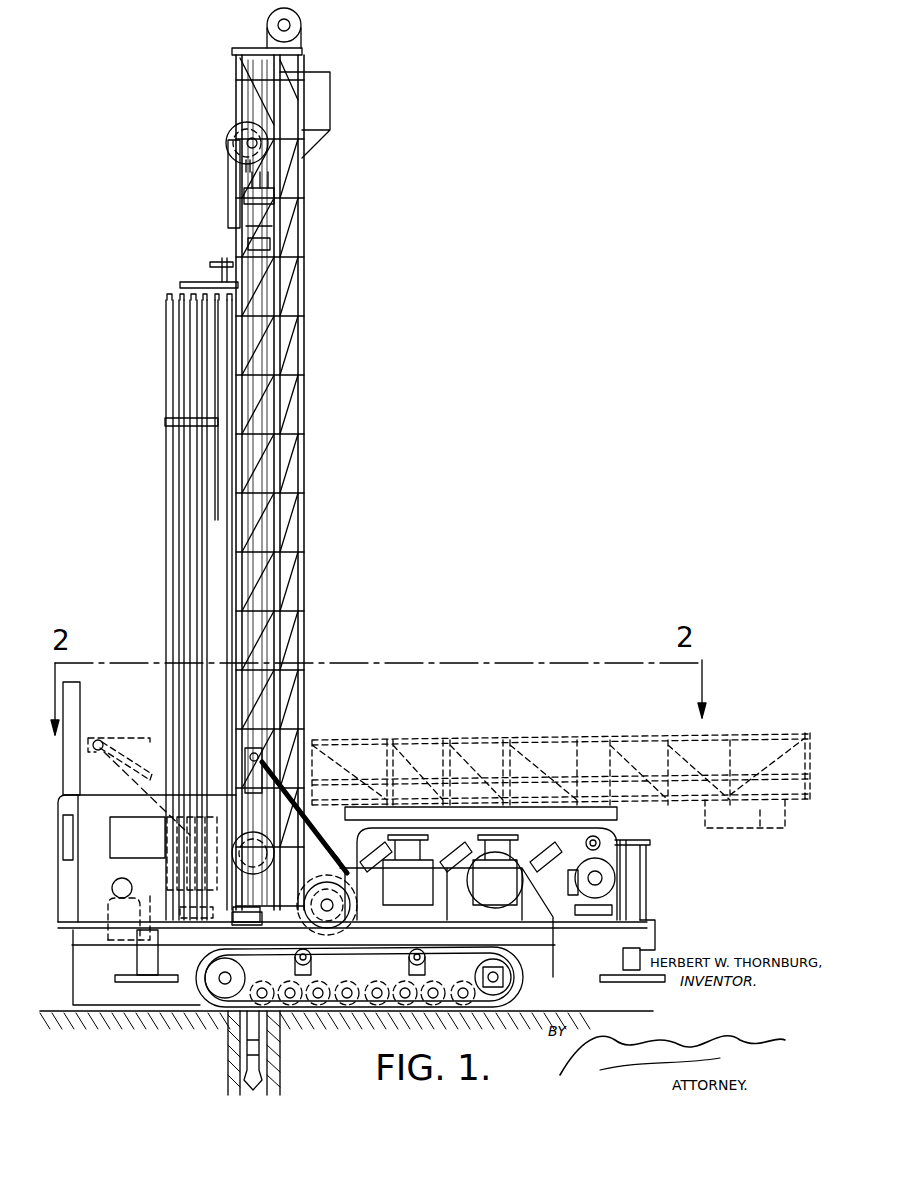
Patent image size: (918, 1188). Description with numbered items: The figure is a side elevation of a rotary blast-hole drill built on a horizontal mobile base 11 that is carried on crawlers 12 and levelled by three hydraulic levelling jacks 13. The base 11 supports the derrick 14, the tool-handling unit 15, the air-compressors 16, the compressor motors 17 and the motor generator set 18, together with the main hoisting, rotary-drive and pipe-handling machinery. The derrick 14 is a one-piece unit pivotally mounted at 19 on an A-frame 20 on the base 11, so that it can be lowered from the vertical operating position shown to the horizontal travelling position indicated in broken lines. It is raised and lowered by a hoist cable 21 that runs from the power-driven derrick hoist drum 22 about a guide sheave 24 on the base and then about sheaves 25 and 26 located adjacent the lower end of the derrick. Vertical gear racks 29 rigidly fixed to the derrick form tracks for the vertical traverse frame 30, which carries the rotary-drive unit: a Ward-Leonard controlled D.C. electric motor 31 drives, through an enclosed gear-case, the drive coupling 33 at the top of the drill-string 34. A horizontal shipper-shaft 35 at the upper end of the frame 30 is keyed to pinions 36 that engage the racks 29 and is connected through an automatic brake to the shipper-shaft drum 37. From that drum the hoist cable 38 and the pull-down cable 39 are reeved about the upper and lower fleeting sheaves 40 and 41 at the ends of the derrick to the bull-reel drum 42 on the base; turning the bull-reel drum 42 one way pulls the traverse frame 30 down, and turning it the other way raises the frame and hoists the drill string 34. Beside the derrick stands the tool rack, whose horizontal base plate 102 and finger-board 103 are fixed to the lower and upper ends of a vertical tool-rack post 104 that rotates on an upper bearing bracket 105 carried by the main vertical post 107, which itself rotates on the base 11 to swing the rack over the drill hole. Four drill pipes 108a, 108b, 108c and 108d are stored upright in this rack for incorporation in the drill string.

The horizontal mobile base 11 is at (578, 948).
The crawlers 12 is at (521, 990).
The hydraulic levelling jacks 13 is at (137, 955).
The derrick 14 is at (291, 431).
The tool-handling unit 15 is at (190, 465).
The air-compressors 16 is at (510, 840).
The compressor motors 17 is at (480, 890).
The motor generator set 18 is at (580, 870).
The pivot 19 is at (265, 752).
The A-frame 20 is at (296, 778).
The hoist cable 21 is at (116, 772).
The derrick hoist drum 22 is at (396, 945).
The guide sheave 24 is at (262, 942).
The sheave 25 is at (98, 742).
The sheave 26 is at (152, 778).
The vertical gear racks 29 is at (250, 102).
The vertical traverse frame 30 is at (232, 185).
The D.C. electric motor 31 is at (262, 178).
The drive coupling 33 is at (262, 243).
The drill-string 34 is at (258, 575).
The shipper-shaft 35 is at (243, 848).
The pinions 36 is at (285, 145).
The shipper-shaft drum 37 is at (226, 140).
The hoist cable 38 is at (305, 512).
The pull-down cable 39 is at (276, 540).
The upper fleeting sheave 40 is at (302, 20).
The lower fleeting sheave 41 is at (291, 901).
The bull-reel drum 42 is at (316, 866).
The base plate 102 is at (190, 888).
The finger-board 103 is at (165, 422).
The tool-rack post 104 is at (190, 318).
The upper bearing bracket 105 is at (215, 272).
The main vertical post 107 is at (222, 356).
The drill pipe 108a is at (203, 384).
The drill pipe 108b is at (180, 405).
The drill pipe 108c is at (168, 340).
The drill pipe 108d is at (176, 298).